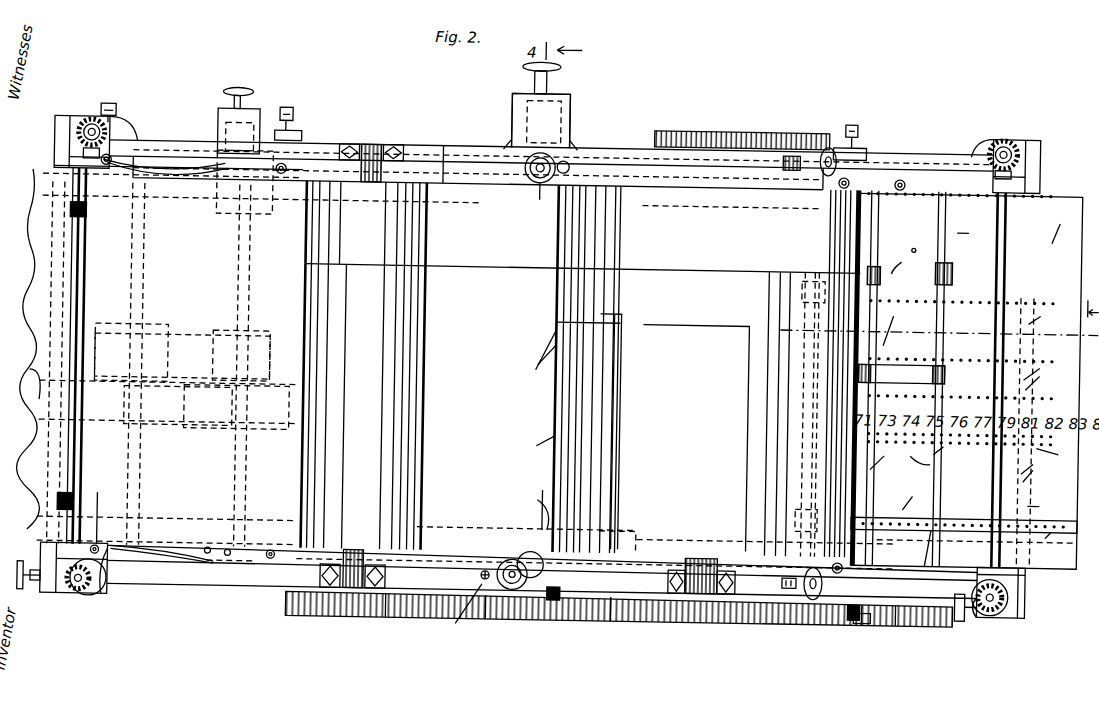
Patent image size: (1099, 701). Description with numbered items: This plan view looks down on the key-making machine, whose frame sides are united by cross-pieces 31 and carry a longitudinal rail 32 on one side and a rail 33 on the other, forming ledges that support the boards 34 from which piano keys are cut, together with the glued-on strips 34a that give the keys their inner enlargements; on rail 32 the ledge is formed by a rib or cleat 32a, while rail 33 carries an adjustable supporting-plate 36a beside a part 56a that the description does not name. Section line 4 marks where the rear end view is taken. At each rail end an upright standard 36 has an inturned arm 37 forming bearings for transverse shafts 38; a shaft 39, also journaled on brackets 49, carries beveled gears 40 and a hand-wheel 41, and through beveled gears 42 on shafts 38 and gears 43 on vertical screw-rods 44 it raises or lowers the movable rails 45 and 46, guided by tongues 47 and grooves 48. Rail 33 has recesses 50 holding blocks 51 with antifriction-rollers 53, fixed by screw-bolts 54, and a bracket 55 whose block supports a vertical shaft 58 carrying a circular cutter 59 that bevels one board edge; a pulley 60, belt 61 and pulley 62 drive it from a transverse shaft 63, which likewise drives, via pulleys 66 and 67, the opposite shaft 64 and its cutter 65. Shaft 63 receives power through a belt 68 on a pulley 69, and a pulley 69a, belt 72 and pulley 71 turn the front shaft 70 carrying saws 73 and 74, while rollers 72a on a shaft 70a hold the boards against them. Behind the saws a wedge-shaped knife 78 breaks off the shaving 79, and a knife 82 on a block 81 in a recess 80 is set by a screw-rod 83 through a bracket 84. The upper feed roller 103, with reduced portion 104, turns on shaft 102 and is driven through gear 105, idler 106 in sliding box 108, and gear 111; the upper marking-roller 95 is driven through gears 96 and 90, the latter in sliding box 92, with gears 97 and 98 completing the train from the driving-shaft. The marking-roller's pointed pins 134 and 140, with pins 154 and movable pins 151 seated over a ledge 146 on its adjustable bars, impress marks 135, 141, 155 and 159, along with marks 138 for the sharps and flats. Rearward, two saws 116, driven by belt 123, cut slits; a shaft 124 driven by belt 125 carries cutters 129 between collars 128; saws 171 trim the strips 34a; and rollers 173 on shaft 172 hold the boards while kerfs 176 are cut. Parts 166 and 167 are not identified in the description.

The section line 4 is at (939, 325).
The cross-pieces 31 is at (1043, 506).
The rail 32 is at (666, 563).
The rib or cleat 32a is at (394, 536).
The rail 33 is at (496, 162).
The boards 34 is at (1030, 382).
The strips 34a is at (520, 270).
The standard 36 is at (51, 150).
The supporting-plate 36a is at (310, 204).
The inturned apertured arm 37 is at (66, 168).
The shafts 38 is at (84, 318).
The shaft 39 is at (212, 592).
The beveled gear 40 is at (64, 598).
The hand-wheel 41 is at (878, 459).
The beveled gear 42 is at (80, 160).
The beveled gear 43 is at (91, 124).
The screw-rods 44 is at (84, 140).
The movable rail 45 is at (533, 567).
The movable rail 46 is at (168, 147).
The tongues 47 is at (62, 129).
The grooves 48 is at (86, 119).
The brackets 49 is at (940, 618).
The recesses 50 is at (286, 137).
The movable block 51 is at (284, 170).
The antifriction-roller 53 is at (108, 164).
The screw-bolts 54 is at (110, 116).
The bracket 55 is at (508, 112).
The plate lug 56a is at (963, 233).
The shaft 58 is at (550, 158).
The circular cutter 59 is at (564, 164).
The pulley 60 is at (546, 184).
The belt 61 is at (439, 146).
The pulley 62 is at (270, 220).
The shaft 63 is at (248, 484).
The shaft 64 is at (540, 558).
The circular cutter 65 is at (516, 618).
The pulley 66 is at (532, 560).
The pulley 67 is at (254, 575).
The belt 68 is at (32, 406).
The pulley 69 is at (224, 439).
The pulley 69a is at (254, 336).
The shaft 70 is at (128, 470).
The shaft 70a is at (60, 503).
The pulley 71 is at (150, 340).
The belt 72 is at (174, 342).
The roller 72a is at (68, 220).
The circular saw 73 is at (111, 546).
The circular saw 74 is at (132, 190).
The wedge-shaped knife 78 is at (203, 552).
The strip or shaving 79 is at (182, 170).
The horizontal recess 80 is at (218, 123).
The block 81 is at (246, 123).
The knife or chisel 82 is at (208, 178).
The screw-rod 83 is at (236, 93).
The bracket 84 is at (230, 101).
The gears 90 is at (802, 144).
The sliding box 92 is at (784, 153).
The upper marking-roller 95 is at (673, 433).
The gear 96 is at (722, 130).
The gears 97 is at (872, 622).
The gears 98 is at (906, 619).
The shaft 102 is at (374, 163).
The upper feed roller 103 is at (363, 407).
The reduced portion 104 is at (365, 223).
The gear 105 is at (398, 620).
The idle gear 106 is at (494, 620).
The sliding box 108 is at (457, 612).
The gear 111 is at (620, 621).
The circular saws 116 is at (890, 524).
The belt 123 is at (858, 617).
The shaft 124 is at (951, 446).
The belt 125 is at (901, 378).
The sliding collars 128 is at (950, 268).
The cutter 129 is at (912, 239).
The pointed pins 134 is at (546, 483).
The marks or indentations 135 is at (920, 562).
The marks or indentations 138 is at (912, 468).
The pointed pins 140 is at (556, 496).
The marks or indentations 141 is at (1038, 467).
The ledge 146 is at (915, 502).
The movable pin 151 is at (556, 376).
The pins 154 is at (554, 308).
The marks or indentations 155 is at (979, 376).
The marks or indentations 159 is at (1043, 373).
The roller shaft 166 is at (557, 258).
The pin 167 is at (1061, 221).
The circular saw 171 is at (899, 260).
The shaft 172 is at (802, 455).
The rollers 173 is at (800, 290).
The kerfs 176 is at (1046, 544).